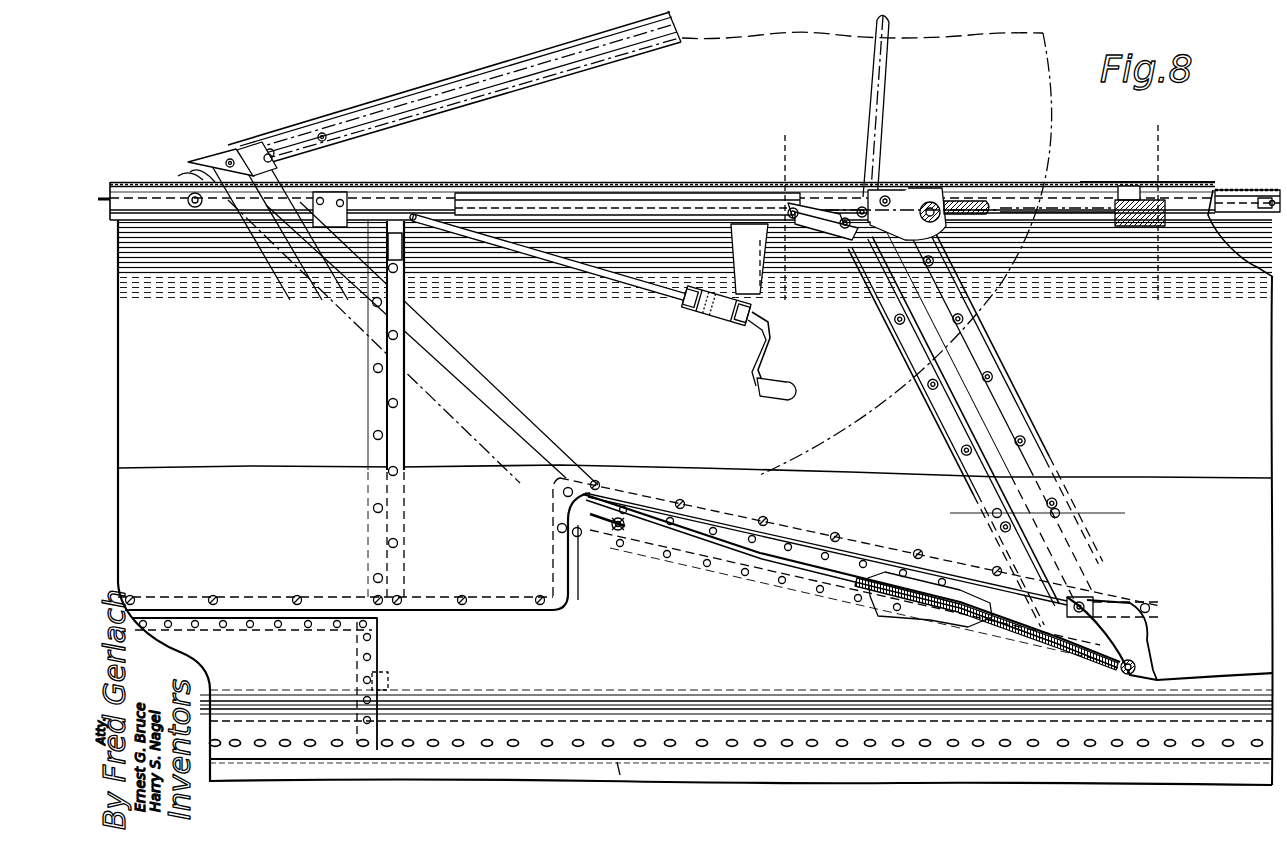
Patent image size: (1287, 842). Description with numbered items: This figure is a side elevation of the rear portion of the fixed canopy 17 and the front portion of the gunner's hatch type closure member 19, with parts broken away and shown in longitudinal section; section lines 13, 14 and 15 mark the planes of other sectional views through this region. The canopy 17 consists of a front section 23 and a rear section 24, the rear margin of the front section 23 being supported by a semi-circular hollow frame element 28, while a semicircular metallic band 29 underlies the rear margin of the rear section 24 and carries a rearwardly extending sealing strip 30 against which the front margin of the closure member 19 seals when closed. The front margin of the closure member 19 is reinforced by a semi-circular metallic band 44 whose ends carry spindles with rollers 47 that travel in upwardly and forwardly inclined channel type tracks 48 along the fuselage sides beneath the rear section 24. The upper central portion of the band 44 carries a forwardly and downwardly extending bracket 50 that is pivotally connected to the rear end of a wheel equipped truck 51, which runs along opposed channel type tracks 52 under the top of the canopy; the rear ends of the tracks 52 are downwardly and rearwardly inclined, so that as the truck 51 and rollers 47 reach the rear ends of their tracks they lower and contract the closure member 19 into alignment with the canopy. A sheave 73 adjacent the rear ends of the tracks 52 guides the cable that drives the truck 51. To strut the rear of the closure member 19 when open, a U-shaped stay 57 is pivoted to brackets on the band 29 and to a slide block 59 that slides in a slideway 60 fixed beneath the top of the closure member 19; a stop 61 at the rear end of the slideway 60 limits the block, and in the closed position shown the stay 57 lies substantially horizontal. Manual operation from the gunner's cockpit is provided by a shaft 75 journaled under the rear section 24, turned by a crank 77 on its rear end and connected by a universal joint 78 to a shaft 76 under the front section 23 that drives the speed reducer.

The section line 13- 13 is at (806, 148).
The section line 14- 14 is at (1142, 122).
The section line 15- 15 is at (948, 498).
The canopy 17 is at (256, 380).
The gunner's hatch type closure member 19 is at (462, 76).
The front section 23 is at (143, 236).
The rear section 24 is at (656, 183).
The semi-circular hollow frame element 28 is at (370, 404).
The semicircular metallic band 29 is at (960, 426).
The sealing strip 30 is at (972, 330).
The semi-circular metallic band 44 is at (630, 500).
The rollers 47 is at (616, 532).
The channel type tracks 48 is at (935, 604).
The bracket 50 is at (268, 146).
The wheel equipped truck 51 is at (190, 166).
The channel type tracks 52 is at (530, 196).
The stay 57 is at (1116, 200).
The slide block 59 is at (1160, 206).
The slideway 60 is at (1230, 210).
The stop 61 is at (1268, 196).
The sheave 73 is at (788, 232).
The shaft 75 is at (653, 288).
The shaft 76 is at (292, 226).
The crank 77 is at (765, 392).
The universal joint 78 is at (404, 240).